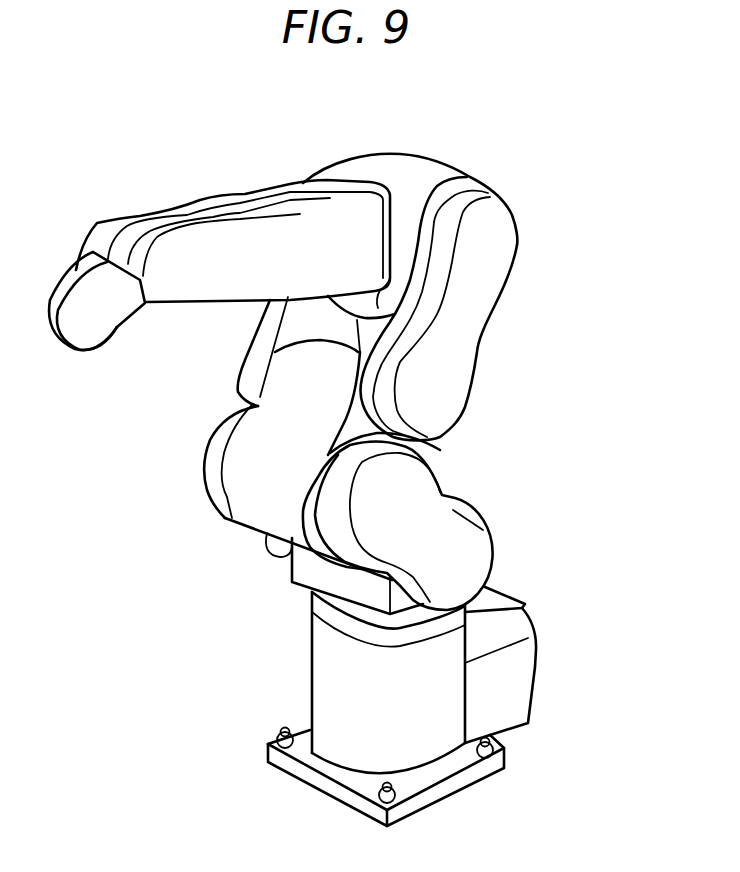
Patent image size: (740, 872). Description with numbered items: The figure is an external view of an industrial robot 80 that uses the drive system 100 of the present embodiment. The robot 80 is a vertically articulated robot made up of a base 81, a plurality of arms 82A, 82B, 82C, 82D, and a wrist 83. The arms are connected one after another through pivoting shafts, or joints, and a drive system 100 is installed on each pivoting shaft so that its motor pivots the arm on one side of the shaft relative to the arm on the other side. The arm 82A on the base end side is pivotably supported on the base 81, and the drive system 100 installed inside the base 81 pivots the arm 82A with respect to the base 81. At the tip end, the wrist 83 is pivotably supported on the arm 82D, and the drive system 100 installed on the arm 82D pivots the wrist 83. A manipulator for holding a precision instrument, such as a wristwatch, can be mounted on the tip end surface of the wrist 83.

The robot 80 is at (547, 262).
The base 81 is at (535, 668).
The arm 82A is at (493, 553).
The arm 82B is at (480, 333).
The arm 82C is at (367, 160).
The arm 82D is at (269, 180).
The wrist 83 is at (72, 270).
The drive system 100 is at (197, 253).